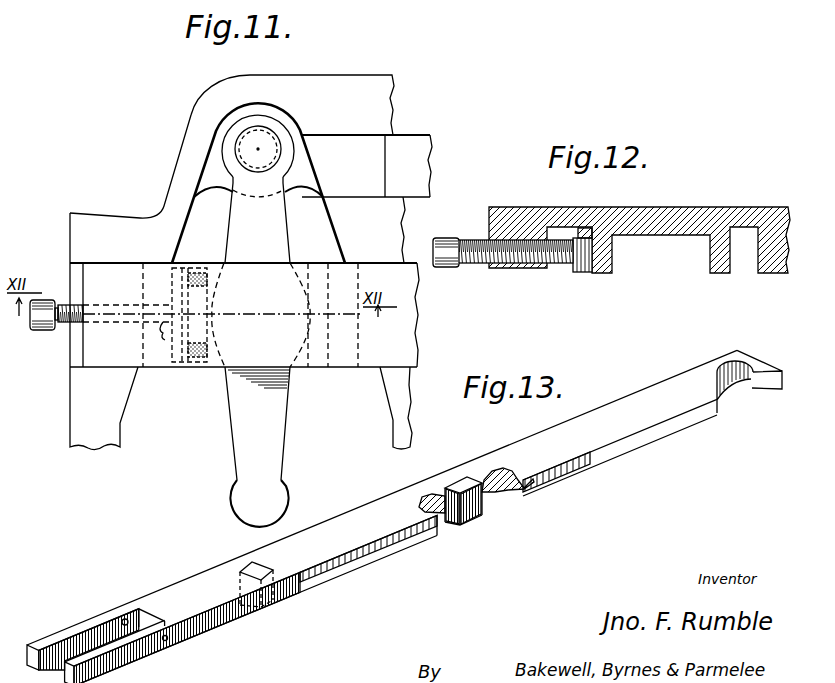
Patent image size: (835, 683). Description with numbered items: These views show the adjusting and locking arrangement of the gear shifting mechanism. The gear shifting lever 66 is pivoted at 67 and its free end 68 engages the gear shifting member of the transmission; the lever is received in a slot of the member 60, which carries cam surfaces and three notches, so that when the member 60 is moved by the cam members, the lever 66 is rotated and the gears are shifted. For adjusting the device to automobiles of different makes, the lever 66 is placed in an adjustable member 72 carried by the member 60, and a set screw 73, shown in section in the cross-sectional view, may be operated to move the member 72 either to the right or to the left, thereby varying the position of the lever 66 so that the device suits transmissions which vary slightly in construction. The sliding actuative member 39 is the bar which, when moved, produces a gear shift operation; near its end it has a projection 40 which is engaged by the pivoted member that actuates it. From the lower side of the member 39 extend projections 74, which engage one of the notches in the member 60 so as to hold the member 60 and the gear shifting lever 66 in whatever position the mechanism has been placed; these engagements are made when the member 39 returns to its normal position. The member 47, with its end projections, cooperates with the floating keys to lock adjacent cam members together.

In FIG. 13, the sliding actuative member 39 is at (592, 462).
In FIG. 13, the projection 40 is at (754, 386).
In FIG. 11, the member with projections 47 is at (412, 143).
In FIG. 11, the member with cam surfaces and notches 60 is at (418, 341).
In FIG. 12, the member with cam surfaces and notches 60 is at (710, 214).
In FIG. 11, the gear shifting lever 66 is at (258, 291).
In FIG. 11, the pivot 67 is at (250, 147).
In FIG. 11, the free end 68 is at (240, 497).
In FIG. 11, the adjustable member 72 is at (203, 362).
In FIG. 12, the adjustable member 72 is at (668, 233).
In FIG. 11, the set screw 73 is at (67, 326).
In FIG. 12, the set screw 73 is at (483, 262).
In FIG. 13, the projections 74 is at (263, 597).